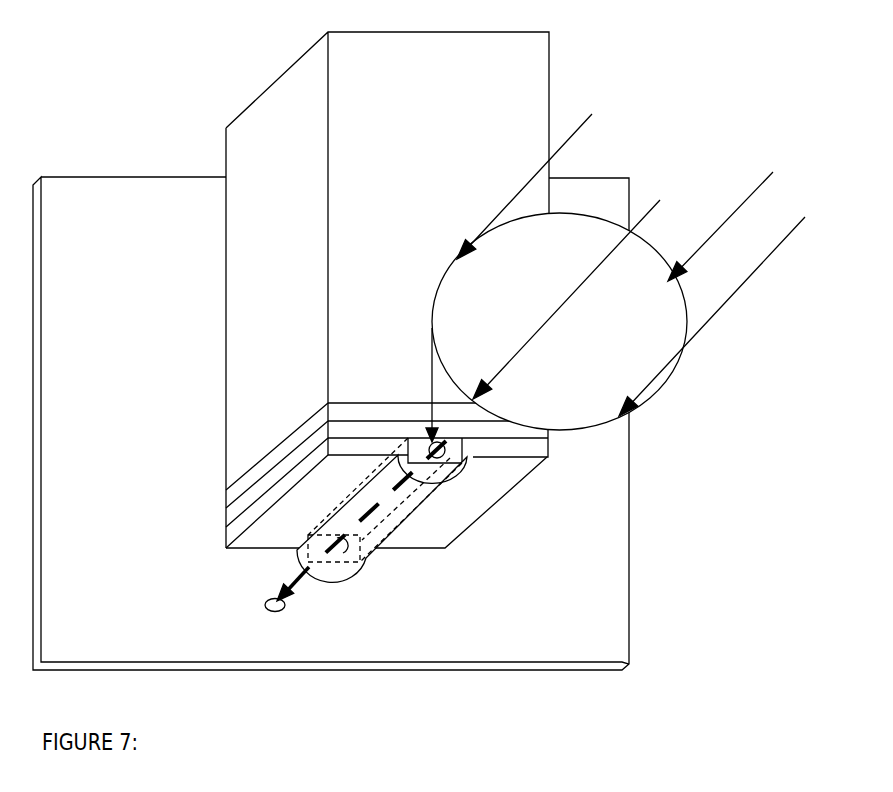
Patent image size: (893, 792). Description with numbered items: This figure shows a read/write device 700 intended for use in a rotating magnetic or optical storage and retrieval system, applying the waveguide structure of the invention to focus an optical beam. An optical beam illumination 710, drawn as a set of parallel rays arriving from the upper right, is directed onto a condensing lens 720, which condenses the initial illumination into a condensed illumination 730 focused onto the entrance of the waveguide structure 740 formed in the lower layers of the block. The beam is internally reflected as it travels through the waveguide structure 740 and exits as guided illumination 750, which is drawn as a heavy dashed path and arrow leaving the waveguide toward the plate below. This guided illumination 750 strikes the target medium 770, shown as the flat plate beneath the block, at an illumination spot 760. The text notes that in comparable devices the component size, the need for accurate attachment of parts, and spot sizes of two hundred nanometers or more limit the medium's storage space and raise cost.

The read/write device 700 is at (170, 131).
The optical beam illumination 710 is at (722, 305).
The condensing lens 720 is at (651, 398).
The condensed illumination 730 is at (547, 430).
The waveguide structure 740 is at (488, 503).
The guided illumination 750 is at (284, 602).
The illumination spot 760 is at (283, 610).
The target medium 770 is at (115, 605).